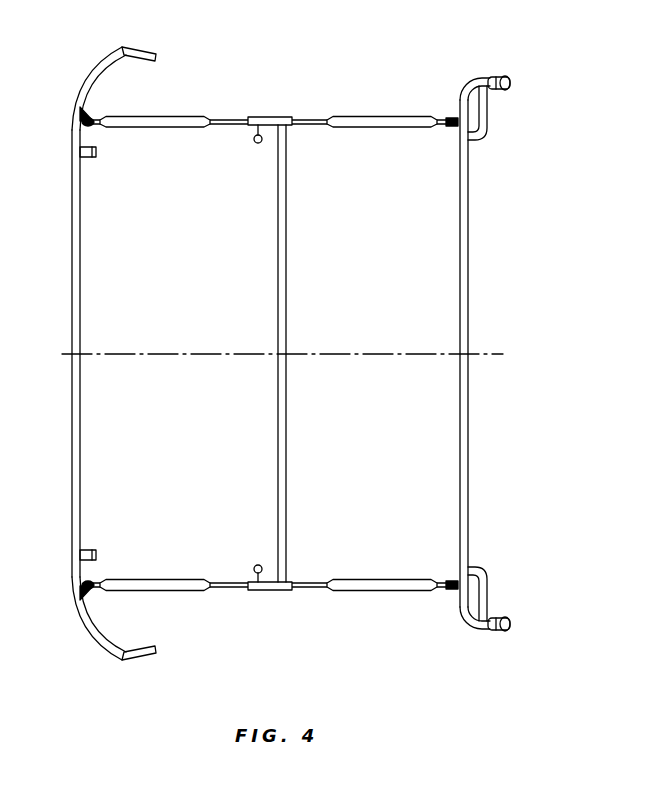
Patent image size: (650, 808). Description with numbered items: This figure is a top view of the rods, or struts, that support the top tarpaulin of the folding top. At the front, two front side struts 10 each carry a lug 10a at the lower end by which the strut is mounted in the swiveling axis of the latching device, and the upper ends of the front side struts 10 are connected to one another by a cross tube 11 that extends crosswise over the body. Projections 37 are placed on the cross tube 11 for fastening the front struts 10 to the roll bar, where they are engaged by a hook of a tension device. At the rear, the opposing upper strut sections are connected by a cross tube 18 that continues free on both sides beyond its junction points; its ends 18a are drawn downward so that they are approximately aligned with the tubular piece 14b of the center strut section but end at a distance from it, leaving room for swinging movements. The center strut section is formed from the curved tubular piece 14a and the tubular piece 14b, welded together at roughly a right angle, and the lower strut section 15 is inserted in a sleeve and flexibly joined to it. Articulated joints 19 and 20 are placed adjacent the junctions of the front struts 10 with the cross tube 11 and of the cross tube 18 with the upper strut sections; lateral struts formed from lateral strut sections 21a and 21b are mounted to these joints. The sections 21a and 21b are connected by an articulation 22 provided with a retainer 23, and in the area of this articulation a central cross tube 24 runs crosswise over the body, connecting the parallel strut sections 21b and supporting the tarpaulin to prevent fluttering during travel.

The front side strut 10 is at (106, 63).
The lug 10a is at (137, 47).
The cross tube 11 is at (72, 392).
The tubular piece 14a is at (490, 128).
The tubular piece 14b is at (493, 77).
The lower strut section 15 is at (512, 81).
The cross tube 18 is at (463, 297).
The end of cross tube 18a is at (470, 90).
The articulated joint 19 is at (80, 110).
The articulated joint 20 is at (452, 117).
The lateral strut section 21a is at (180, 115).
The lateral strut section 21b is at (357, 116).
The articulation 22 is at (271, 117).
The retainer 23 is at (255, 122).
The central cross tube 24 is at (285, 258).
The projection 37 is at (90, 160).